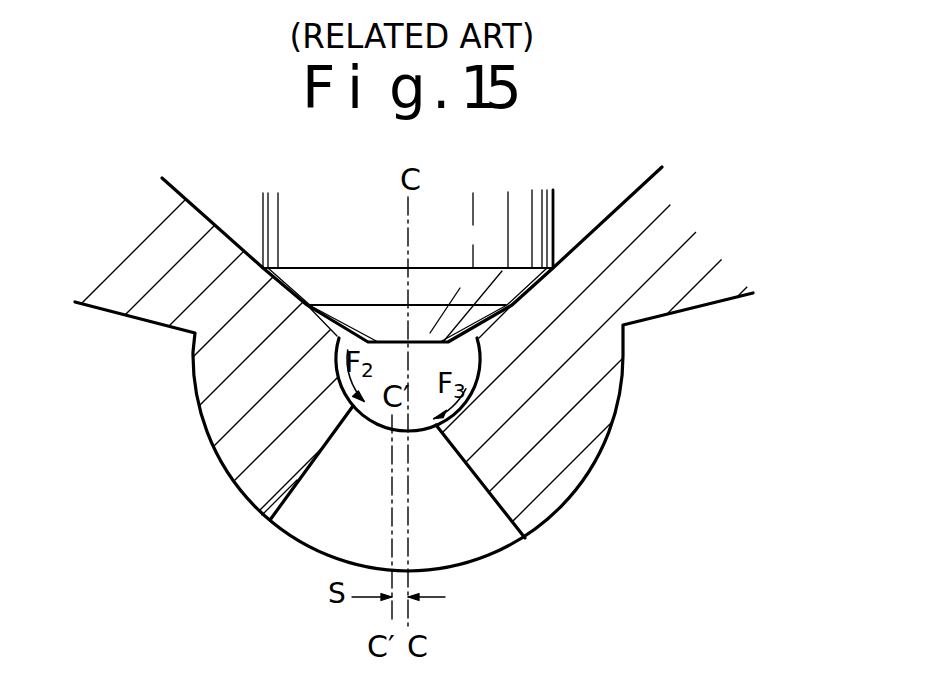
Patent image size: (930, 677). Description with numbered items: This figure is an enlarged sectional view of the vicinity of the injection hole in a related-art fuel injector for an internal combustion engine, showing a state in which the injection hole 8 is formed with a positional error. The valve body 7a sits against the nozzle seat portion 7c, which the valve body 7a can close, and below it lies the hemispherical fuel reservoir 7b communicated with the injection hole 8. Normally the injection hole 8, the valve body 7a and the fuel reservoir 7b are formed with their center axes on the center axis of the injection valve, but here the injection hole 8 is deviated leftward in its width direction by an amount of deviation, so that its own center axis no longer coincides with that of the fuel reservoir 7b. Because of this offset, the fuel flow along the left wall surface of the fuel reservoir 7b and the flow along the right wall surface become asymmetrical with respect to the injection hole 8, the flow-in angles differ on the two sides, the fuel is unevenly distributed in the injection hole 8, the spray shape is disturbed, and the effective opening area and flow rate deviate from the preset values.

The valve body 7a is at (517, 203).
The fuel reservoir 7b is at (465, 357).
The nozzle seat portion 7c is at (543, 287).
The injection hole 8 is at (463, 532).